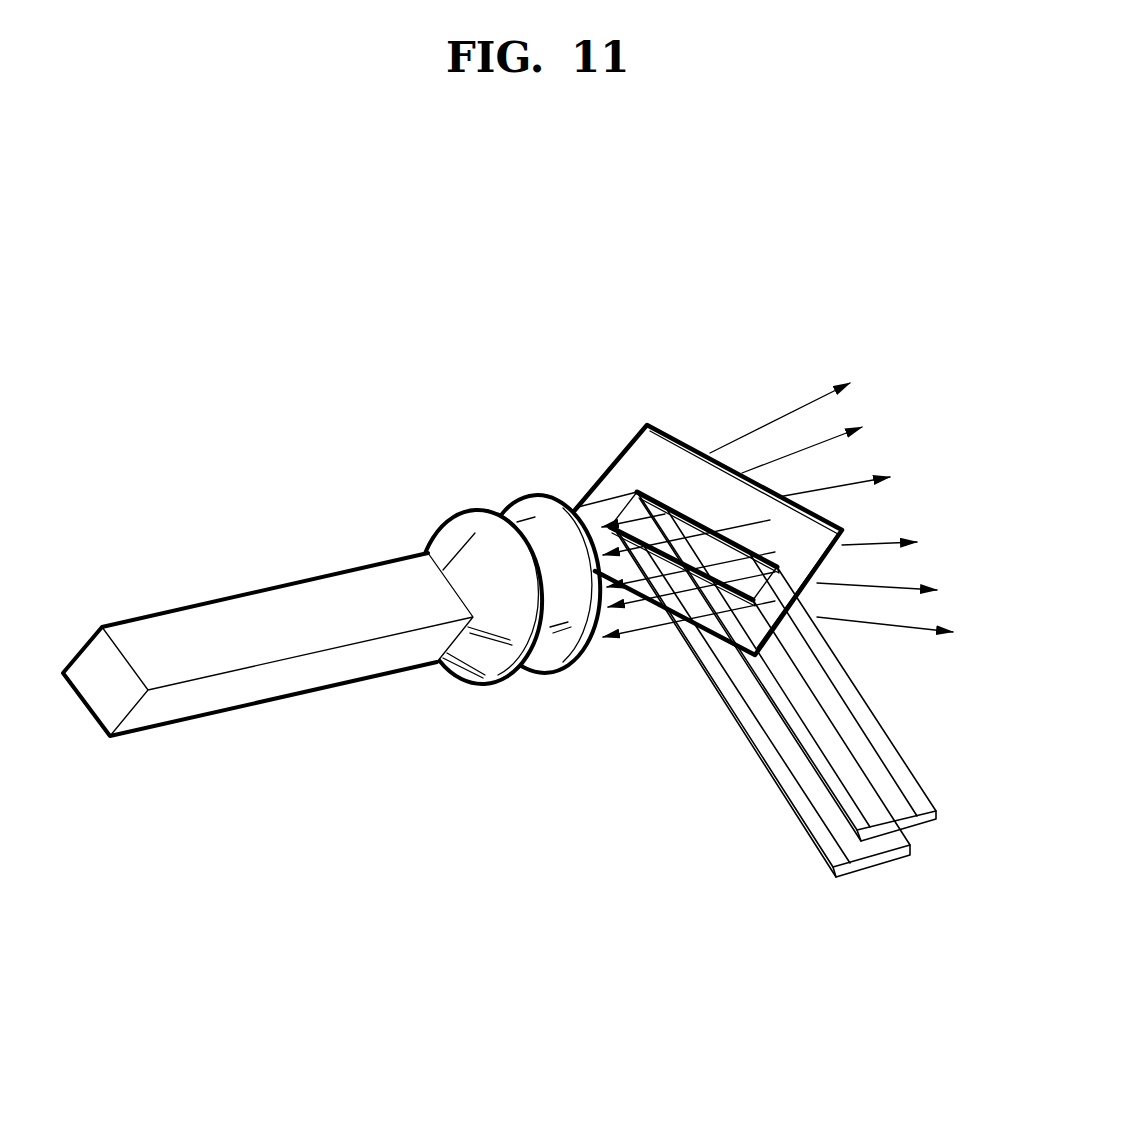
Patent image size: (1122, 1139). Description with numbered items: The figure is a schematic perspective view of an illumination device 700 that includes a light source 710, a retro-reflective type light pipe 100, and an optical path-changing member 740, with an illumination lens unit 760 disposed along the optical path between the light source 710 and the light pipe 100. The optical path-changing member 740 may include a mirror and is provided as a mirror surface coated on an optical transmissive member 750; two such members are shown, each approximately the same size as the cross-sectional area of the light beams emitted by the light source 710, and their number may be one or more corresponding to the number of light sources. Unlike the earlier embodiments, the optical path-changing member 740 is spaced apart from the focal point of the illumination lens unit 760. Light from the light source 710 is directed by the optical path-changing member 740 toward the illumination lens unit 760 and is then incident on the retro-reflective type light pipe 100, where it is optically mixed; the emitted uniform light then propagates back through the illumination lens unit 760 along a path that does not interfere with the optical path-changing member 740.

The retro-reflective type light pipe 100 is at (156, 627).
The illumination device 700 is at (850, 316).
The light source 710 is at (903, 832).
The optical path-changing member 740 is at (612, 525).
The optical transmissive member 750 is at (672, 445).
The illumination lens unit 760 is at (417, 514).